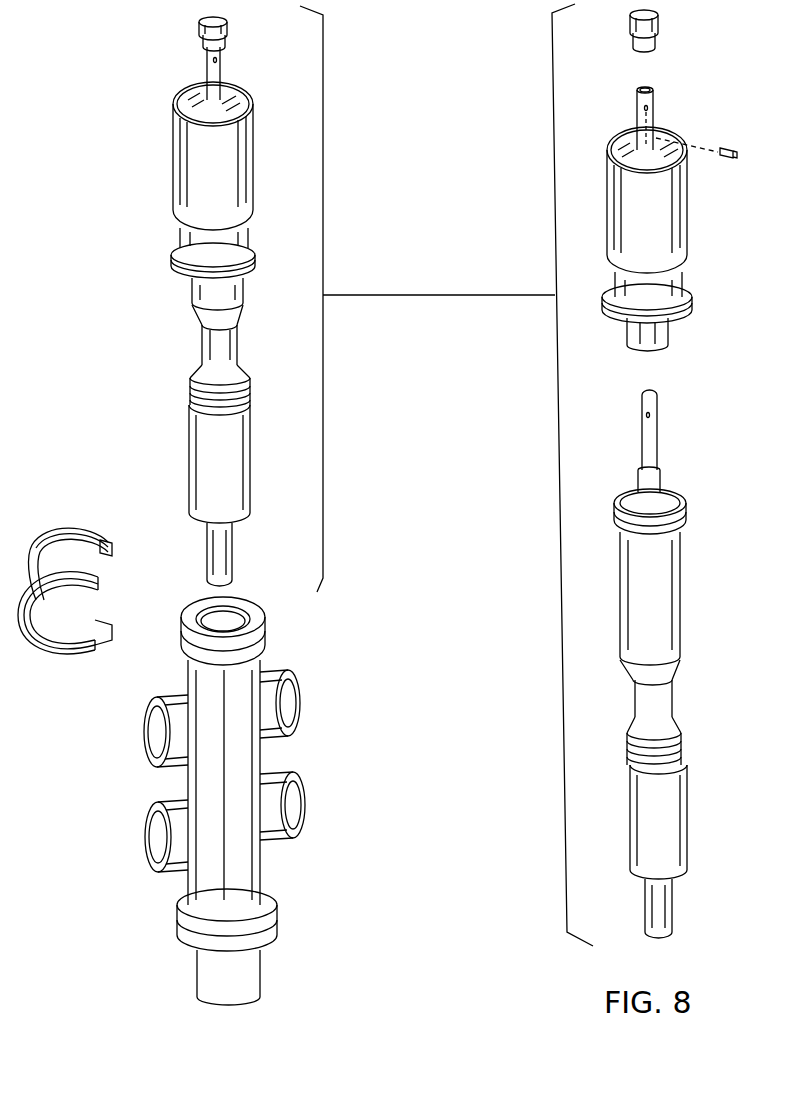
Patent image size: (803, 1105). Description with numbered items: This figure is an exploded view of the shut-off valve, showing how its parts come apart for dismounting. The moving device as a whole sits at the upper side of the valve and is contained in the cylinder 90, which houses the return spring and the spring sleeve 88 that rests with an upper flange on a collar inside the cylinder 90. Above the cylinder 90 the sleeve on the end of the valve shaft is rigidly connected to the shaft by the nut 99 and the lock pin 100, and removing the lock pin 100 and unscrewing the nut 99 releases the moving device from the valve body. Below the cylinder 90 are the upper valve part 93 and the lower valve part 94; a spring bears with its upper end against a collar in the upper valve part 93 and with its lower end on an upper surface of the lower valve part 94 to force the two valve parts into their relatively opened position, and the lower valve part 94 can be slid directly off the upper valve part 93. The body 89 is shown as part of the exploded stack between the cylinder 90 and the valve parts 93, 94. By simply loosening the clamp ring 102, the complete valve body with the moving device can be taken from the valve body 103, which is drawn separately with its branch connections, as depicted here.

The spring sleeve 88 is at (647, 335).
The sleeve body 89 is at (222, 298).
The cylinder 90 is at (238, 181).
The upper valve part 93 is at (203, 368).
The lower valve part 94 is at (198, 443).
The nut 99 is at (653, 28).
The lock pin 100 is at (746, 128).
The clamp ring 102 is at (62, 653).
The valve body 103 is at (243, 763).